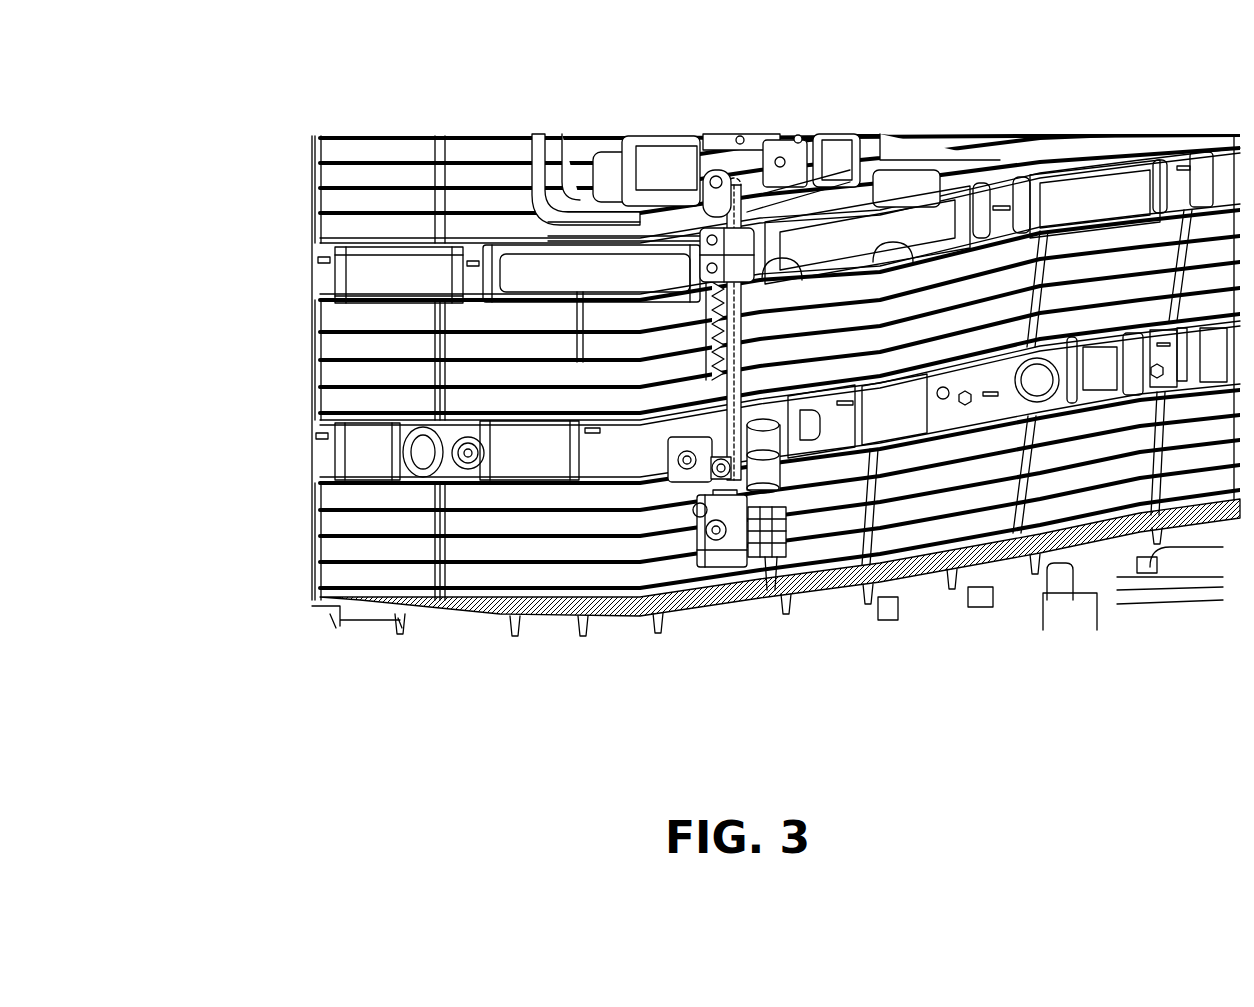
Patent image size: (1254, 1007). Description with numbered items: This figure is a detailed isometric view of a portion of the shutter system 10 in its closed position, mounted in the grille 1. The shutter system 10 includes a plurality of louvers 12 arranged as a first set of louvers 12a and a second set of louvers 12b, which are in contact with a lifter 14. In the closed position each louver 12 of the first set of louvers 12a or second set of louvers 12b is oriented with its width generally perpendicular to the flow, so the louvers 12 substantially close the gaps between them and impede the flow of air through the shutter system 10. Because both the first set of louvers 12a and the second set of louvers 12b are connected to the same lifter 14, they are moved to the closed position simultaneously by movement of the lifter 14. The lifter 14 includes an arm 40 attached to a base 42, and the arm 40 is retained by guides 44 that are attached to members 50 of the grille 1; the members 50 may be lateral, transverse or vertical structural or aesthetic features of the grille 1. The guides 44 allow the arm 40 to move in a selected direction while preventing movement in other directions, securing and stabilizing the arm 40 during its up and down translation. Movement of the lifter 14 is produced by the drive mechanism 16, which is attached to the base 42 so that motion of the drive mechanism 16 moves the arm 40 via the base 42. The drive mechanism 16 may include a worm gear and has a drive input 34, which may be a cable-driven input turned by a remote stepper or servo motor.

The grille 1 is at (723, 383).
The shutter system 10 is at (613, 489).
The louvers 12 is at (641, 313).
The first set of louvers 12a is at (467, 375).
The second set of louvers 12b is at (1000, 318).
The lifter 14 is at (735, 198).
The drive mechanism 16 is at (771, 551).
The drive input 34 is at (767, 436).
The arm 40 is at (742, 240).
The base 42 is at (721, 540).
The guides 44 is at (748, 262).
The members 50 is at (388, 273).